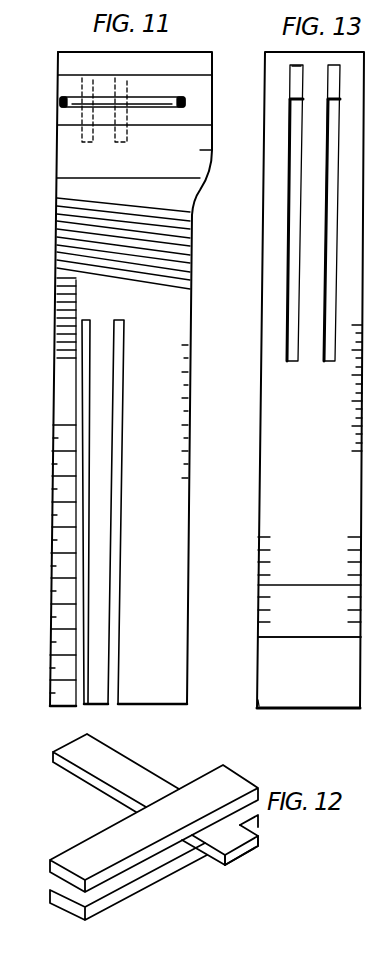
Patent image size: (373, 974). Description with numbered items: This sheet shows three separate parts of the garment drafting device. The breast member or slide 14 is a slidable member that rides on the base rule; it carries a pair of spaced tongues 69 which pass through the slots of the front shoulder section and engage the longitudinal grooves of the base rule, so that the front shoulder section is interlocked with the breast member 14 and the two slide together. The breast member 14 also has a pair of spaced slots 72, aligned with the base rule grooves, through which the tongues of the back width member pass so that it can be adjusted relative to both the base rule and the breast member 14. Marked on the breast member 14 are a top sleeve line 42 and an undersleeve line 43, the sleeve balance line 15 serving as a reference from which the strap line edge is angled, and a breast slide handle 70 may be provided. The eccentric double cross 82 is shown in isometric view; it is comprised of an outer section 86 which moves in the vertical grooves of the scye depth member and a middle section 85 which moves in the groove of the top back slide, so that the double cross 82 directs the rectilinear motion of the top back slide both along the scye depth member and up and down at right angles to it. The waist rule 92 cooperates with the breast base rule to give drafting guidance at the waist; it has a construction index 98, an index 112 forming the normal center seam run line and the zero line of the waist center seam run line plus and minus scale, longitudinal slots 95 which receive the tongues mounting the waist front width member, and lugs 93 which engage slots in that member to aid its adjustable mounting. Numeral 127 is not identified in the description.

In FIG. 11, the breast member or slide 14 is at (152, 648).
In FIG. 11, the sleeve balance line 15 is at (185, 127).
In FIG. 11, the top sleeve line 42 is at (76, 75).
In FIG. 11, the undersleeve line 43 is at (103, 178).
In FIG. 11, the tongues 69 is at (121, 97).
In FIG. 11, the breast slide handle 70 is at (78, 103).
In FIG. 11, the slots 72 is at (78, 688).
In FIG. 12, the eccentric double cross 82 is at (182, 787).
In FIG. 12, the middle section 85 is at (222, 838).
In FIG. 12, the outer section 86 is at (226, 792).
In FIG. 13, the waist rule 92 is at (288, 415).
In FIG. 13, the lugs 93 is at (337, 88).
In FIG. 13, the slots or grooves 95 is at (331, 292).
In FIG. 13, the construction index 98 is at (309, 639).
In FIG. 13, the index 112 is at (325, 587).
In FIG. 13, the base portion 127 is at (282, 680).